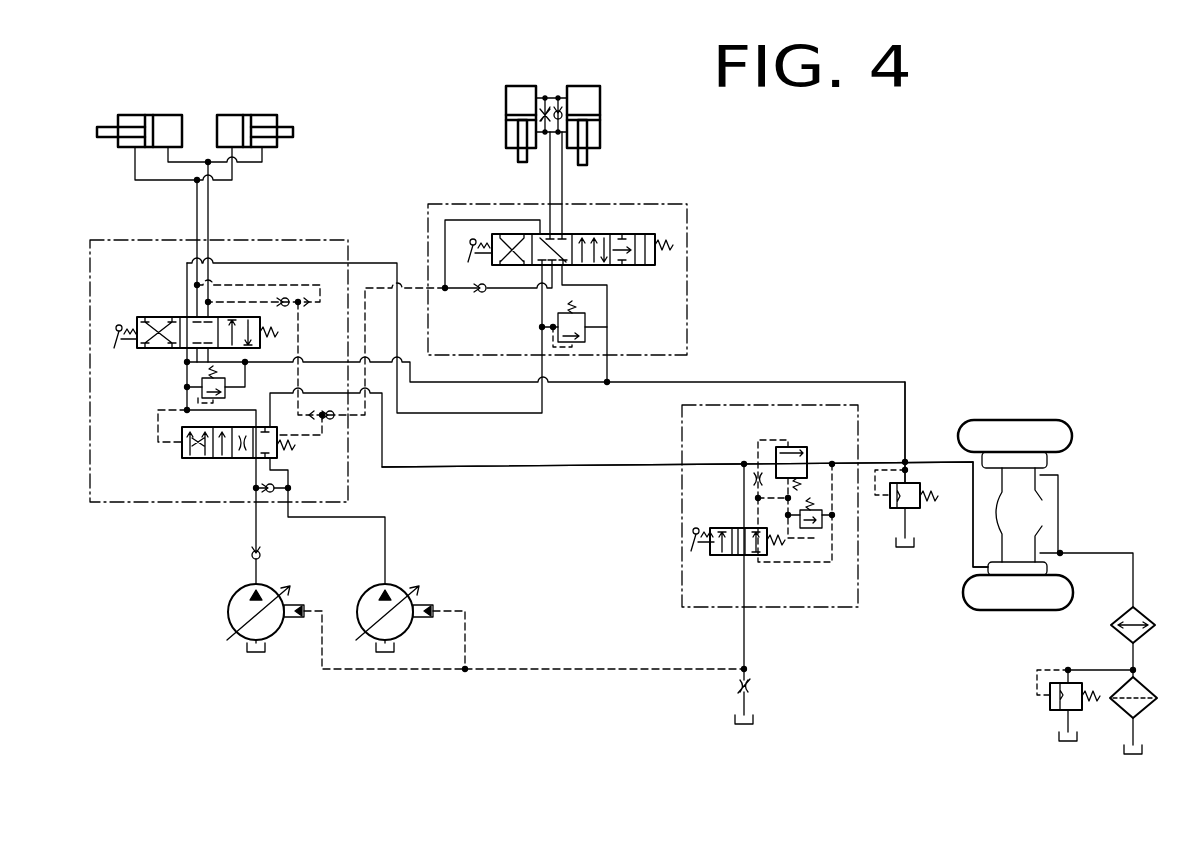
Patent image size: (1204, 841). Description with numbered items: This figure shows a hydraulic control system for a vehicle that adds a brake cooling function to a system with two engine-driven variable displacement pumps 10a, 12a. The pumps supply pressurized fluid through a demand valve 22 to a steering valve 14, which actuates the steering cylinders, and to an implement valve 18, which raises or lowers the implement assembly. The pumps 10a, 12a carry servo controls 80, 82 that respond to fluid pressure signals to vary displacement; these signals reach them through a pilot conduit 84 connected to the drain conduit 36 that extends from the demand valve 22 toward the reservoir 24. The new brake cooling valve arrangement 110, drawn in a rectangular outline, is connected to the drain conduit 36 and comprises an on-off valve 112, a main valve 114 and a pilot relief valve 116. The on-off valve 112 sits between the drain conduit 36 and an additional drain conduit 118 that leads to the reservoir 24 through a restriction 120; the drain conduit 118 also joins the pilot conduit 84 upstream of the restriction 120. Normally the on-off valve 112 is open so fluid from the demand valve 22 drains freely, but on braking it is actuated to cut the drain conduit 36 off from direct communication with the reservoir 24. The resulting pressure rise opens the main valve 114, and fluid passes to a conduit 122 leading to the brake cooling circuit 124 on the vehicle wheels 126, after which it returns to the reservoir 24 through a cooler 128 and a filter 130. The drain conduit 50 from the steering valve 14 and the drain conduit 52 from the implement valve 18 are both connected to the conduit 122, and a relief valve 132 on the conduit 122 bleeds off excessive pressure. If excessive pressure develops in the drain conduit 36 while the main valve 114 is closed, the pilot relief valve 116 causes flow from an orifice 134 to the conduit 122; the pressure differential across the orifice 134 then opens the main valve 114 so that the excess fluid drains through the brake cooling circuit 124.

The variable displacement pump 10a is at (280, 625).
The variable displacement pump 12a is at (405, 625).
The steering valve 14 is at (137, 349).
The implement valve 18 is at (628, 224).
The demand valve 22 is at (182, 459).
The reservoir 24 is at (750, 724).
The drain conduit 36 is at (520, 465).
The drain conduit 50 is at (574, 383).
The drain conduit 52 is at (600, 300).
The servo control 80 is at (302, 604).
The servo control 82 is at (430, 604).
The pilot conduit 84 is at (555, 668).
The brake cooling valve arrangement 110 is at (682, 510).
The on-off valve 112 is at (724, 556).
The main valve 114 is at (805, 447).
The pilot relief valve 116 is at (818, 528).
The drain conduit 118 is at (746, 637).
The restriction 120 is at (752, 686).
The conduit 122 is at (940, 462).
The brake cooling circuit 124 is at (973, 527).
The vehicle wheels 126 is at (1030, 428).
The cooler 128 is at (1108, 624).
The filter 130 is at (1146, 664).
The relief valve 132 is at (920, 478).
The orifice 134 is at (750, 478).